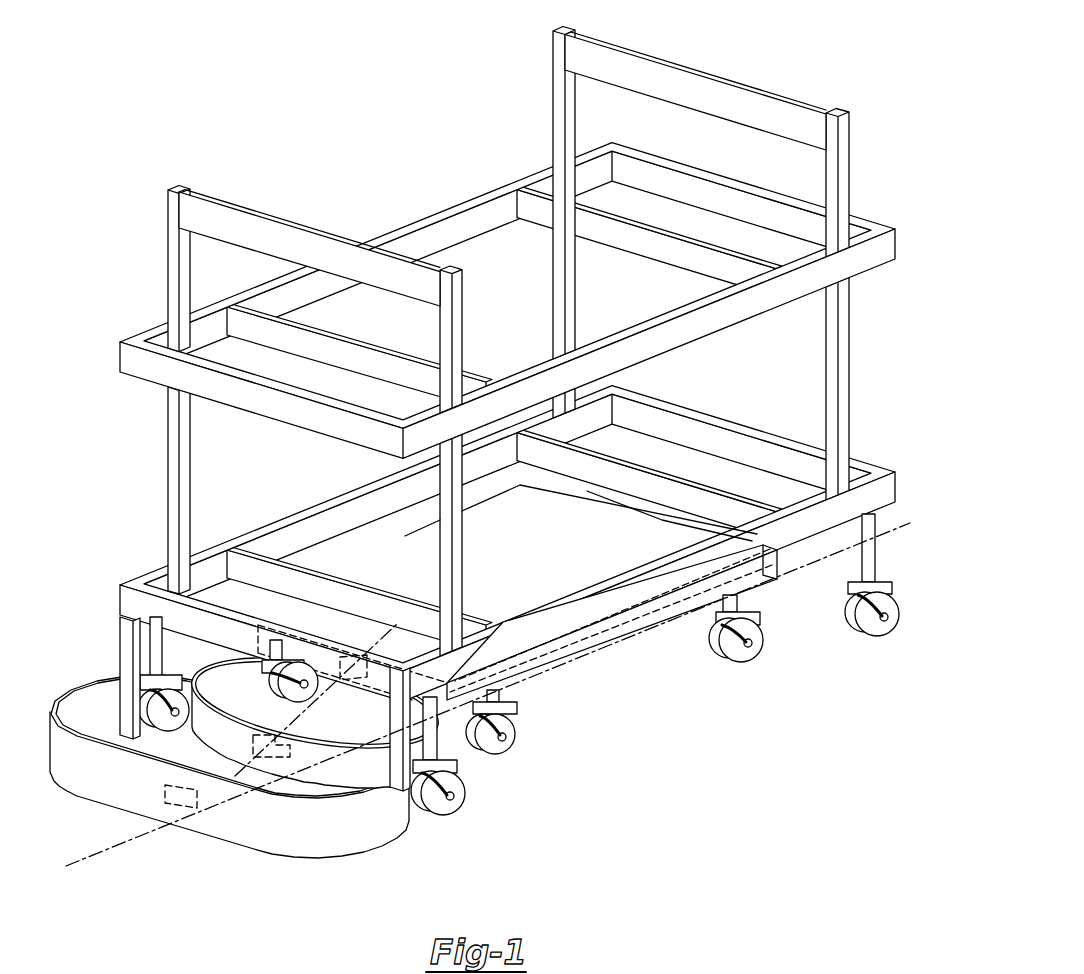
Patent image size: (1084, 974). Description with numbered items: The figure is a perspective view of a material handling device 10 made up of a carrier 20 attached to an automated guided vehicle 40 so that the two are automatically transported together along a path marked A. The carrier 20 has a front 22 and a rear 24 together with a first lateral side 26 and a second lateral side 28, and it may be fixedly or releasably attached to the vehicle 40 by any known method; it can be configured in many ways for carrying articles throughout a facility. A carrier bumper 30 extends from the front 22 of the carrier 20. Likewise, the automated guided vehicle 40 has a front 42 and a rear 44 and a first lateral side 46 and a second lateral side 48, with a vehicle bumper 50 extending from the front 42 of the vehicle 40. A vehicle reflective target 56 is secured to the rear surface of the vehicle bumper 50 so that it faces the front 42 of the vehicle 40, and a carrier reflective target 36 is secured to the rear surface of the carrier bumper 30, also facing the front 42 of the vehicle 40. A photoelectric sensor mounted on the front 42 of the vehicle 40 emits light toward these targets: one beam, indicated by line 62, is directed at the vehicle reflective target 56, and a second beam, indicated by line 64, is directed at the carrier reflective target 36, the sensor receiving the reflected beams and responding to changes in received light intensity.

The material handling device 10 is at (126, 282).
The carrier 20 is at (745, 102).
The front of the carrier 22 is at (130, 604).
The rear of the carrier 24 is at (507, 286).
The first lateral side of the carrier 26 is at (898, 487).
The second lateral side of the carrier 28 is at (292, 521).
The carrier bumper 30 is at (229, 766).
The carrier reflective target 36 is at (163, 792).
The automated guided vehicle 40 is at (540, 555).
The front of the vehicle 42 is at (445, 703).
The rear of the vehicle 44 is at (660, 512).
The first lateral side of the vehicle 46 is at (767, 565).
The second lateral side of the vehicle 48 is at (258, 638).
The vehicle bumper 50 is at (315, 737).
The vehicle reflective target 56 is at (302, 742).
The line indicating beam of light 62 is at (315, 712).
The line indicating second beam of light 64 is at (214, 766).